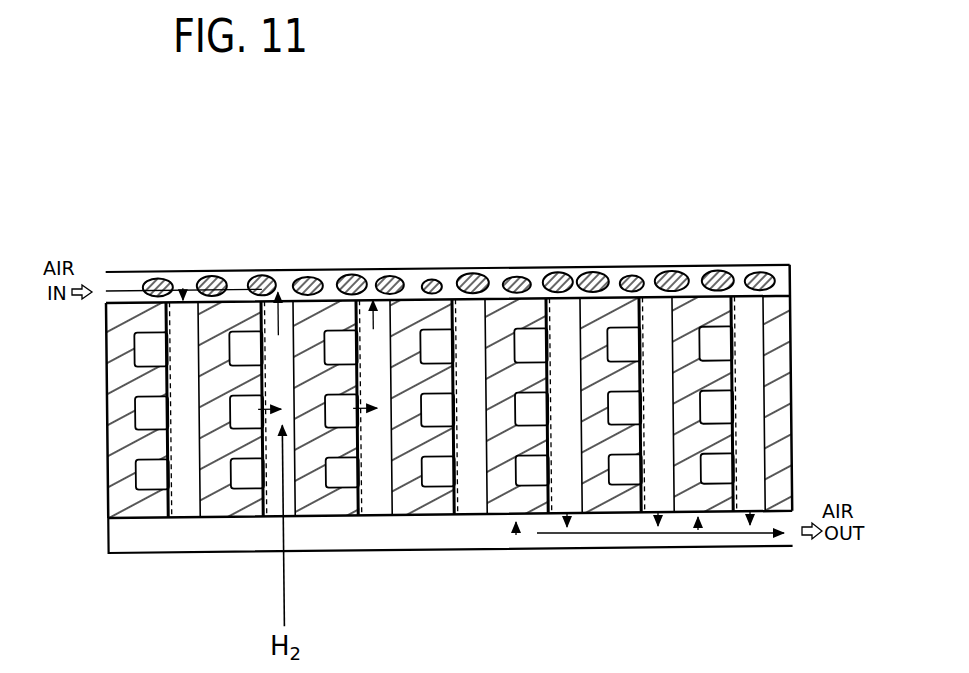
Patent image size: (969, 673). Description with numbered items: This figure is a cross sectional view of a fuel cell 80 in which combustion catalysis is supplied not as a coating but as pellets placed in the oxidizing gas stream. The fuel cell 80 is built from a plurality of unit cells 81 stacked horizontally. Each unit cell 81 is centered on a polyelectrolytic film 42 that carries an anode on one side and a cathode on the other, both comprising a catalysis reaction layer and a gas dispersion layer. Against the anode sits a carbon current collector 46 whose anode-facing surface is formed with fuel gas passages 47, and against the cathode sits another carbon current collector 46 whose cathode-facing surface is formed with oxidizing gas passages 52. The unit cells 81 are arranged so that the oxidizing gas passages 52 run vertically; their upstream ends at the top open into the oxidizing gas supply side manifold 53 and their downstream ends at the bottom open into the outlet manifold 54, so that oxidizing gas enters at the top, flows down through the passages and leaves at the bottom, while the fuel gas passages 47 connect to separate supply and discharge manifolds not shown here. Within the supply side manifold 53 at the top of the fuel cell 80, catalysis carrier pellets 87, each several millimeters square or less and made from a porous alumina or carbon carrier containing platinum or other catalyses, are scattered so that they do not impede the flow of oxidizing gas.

The polyelectrolytic film 42 is at (172, 503).
The carbon current collector 46 is at (696, 297).
The fuel gas passages 47 is at (335, 342).
The oxidizing gas passages 52 is at (750, 400).
The oxidizing gas supply side manifold 53 is at (408, 270).
The air outlet duct 54 is at (432, 540).
The fuel cell 80 is at (474, 254).
The unit cells 81 is at (146, 525).
The catalysis carrier pellets 87 is at (265, 273).